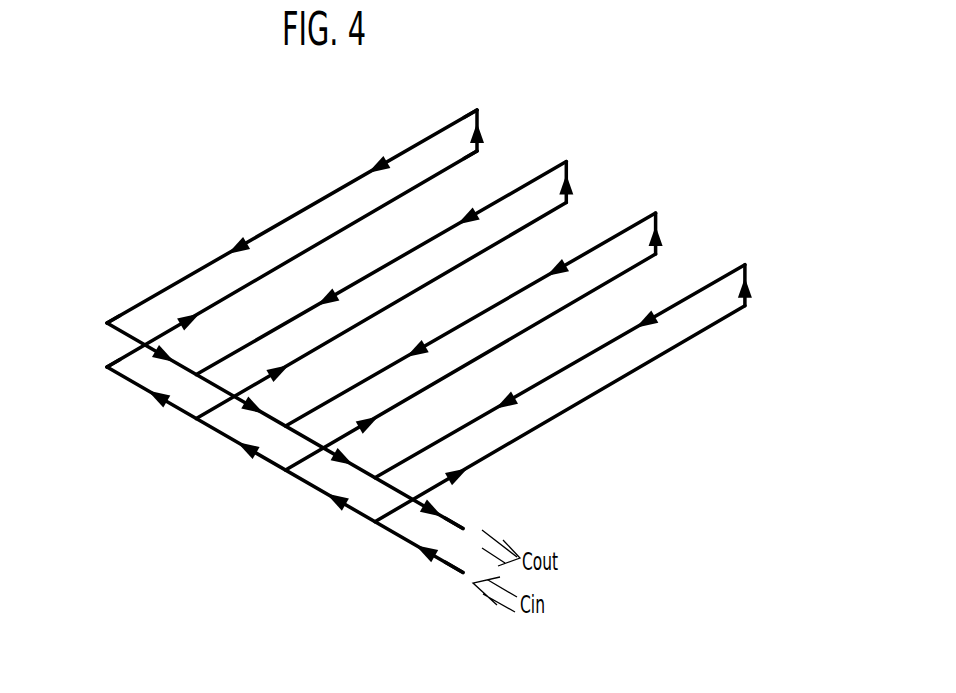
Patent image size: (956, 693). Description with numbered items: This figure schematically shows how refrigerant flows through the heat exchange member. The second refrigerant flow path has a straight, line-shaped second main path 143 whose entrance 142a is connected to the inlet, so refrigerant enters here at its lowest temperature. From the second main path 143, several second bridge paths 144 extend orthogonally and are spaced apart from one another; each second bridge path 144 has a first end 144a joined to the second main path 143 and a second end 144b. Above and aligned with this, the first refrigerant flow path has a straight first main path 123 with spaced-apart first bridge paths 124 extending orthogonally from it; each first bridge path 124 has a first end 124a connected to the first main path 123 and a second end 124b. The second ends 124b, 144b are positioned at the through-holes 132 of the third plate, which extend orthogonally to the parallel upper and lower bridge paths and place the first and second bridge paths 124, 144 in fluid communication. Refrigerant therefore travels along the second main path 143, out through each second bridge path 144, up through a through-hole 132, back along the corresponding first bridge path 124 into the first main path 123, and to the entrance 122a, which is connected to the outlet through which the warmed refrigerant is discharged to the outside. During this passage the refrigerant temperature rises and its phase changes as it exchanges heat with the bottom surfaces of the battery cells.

The first bridge path 124 is at (418, 140).
The first end of first bridge path 124a is at (102, 316).
The second end of first bridge path 124b is at (489, 98).
The through-hole 132 is at (483, 117).
The second bridge path 144 is at (112, 358).
The first end of second bridge path 144a is at (98, 372).
The second end of second bridge path 144b is at (490, 154).
The first main path 123 is at (297, 434).
The second main path 143 is at (213, 430).
The entrance of first refrigerant flow path 122a is at (458, 523).
The entrance of second refrigerant flow path 142a is at (447, 566).